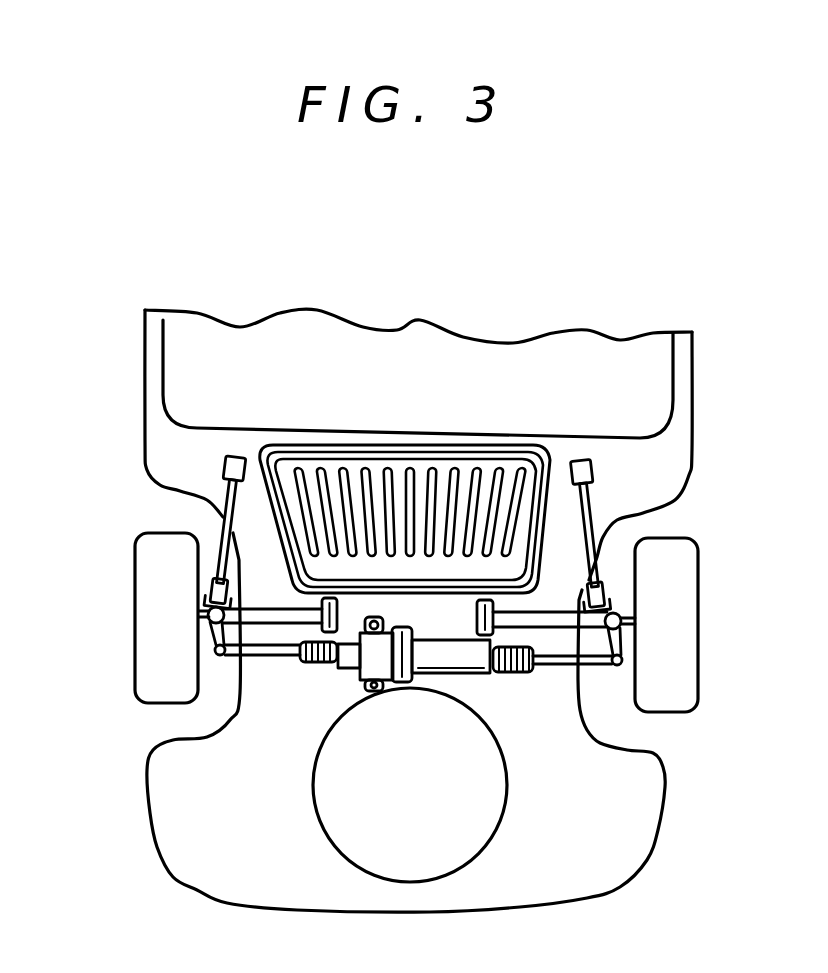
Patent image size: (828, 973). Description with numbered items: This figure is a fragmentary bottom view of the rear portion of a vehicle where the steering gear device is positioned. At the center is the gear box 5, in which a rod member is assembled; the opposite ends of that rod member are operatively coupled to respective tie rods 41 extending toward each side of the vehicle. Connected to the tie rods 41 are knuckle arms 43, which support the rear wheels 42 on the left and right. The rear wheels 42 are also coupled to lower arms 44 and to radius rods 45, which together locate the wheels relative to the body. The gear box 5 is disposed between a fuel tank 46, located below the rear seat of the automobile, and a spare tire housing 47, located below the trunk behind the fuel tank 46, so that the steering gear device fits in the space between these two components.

The gear box 5 is at (427, 678).
The tie rods 41 is at (277, 660).
The rear wheels 42 is at (153, 567).
The knuckle arms 43 is at (180, 630).
The lower arms 44 is at (270, 605).
The radius rods 45 is at (223, 517).
The fuel tank 46 is at (425, 468).
The spare tire housing 47 is at (312, 793).